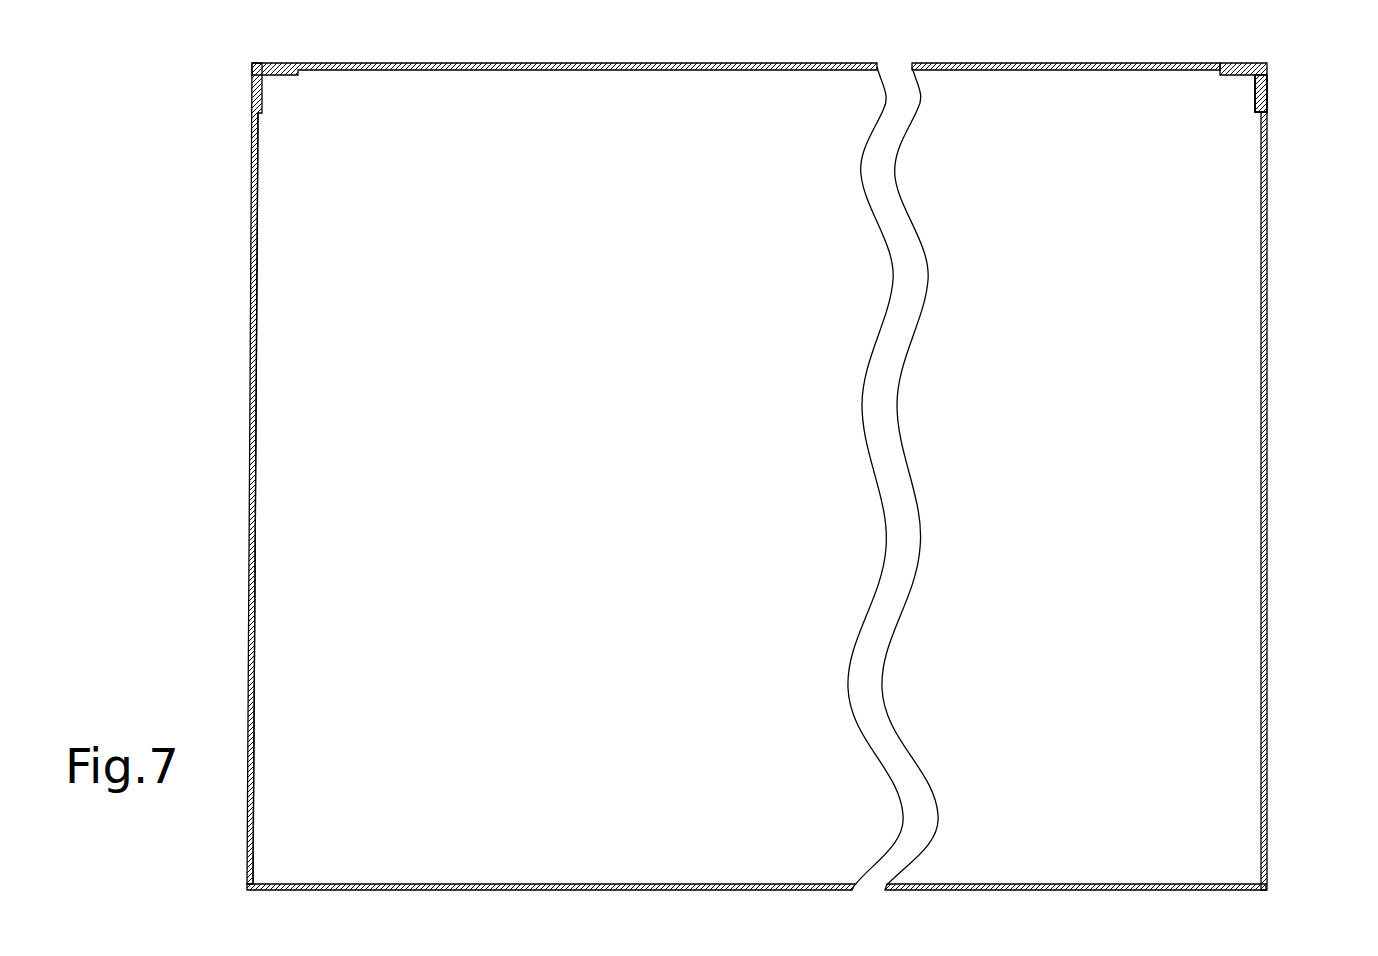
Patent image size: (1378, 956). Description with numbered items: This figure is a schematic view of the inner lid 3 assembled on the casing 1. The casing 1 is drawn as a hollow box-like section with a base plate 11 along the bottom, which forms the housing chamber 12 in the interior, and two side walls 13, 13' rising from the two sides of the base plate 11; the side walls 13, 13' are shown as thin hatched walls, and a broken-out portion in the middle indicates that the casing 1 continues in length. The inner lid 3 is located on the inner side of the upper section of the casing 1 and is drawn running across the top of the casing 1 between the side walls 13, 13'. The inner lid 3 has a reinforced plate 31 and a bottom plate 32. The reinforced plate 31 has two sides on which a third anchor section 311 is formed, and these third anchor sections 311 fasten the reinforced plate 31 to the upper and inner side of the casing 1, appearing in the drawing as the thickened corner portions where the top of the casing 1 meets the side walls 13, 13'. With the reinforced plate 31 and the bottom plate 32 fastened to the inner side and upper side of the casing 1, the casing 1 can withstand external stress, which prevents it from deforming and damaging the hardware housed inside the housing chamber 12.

The casing 1 is at (221, 796).
The inner lid 3 is at (663, 69).
The base plate 11 is at (737, 884).
The housing chamber 12 is at (318, 512).
The side wall 13 is at (202, 473).
The side wall 13' is at (1308, 482).
The reinforced plate 31 is at (1257, 64).
The bottom plate 32 is at (1035, 71).
The third anchor section 311 is at (1267, 88).